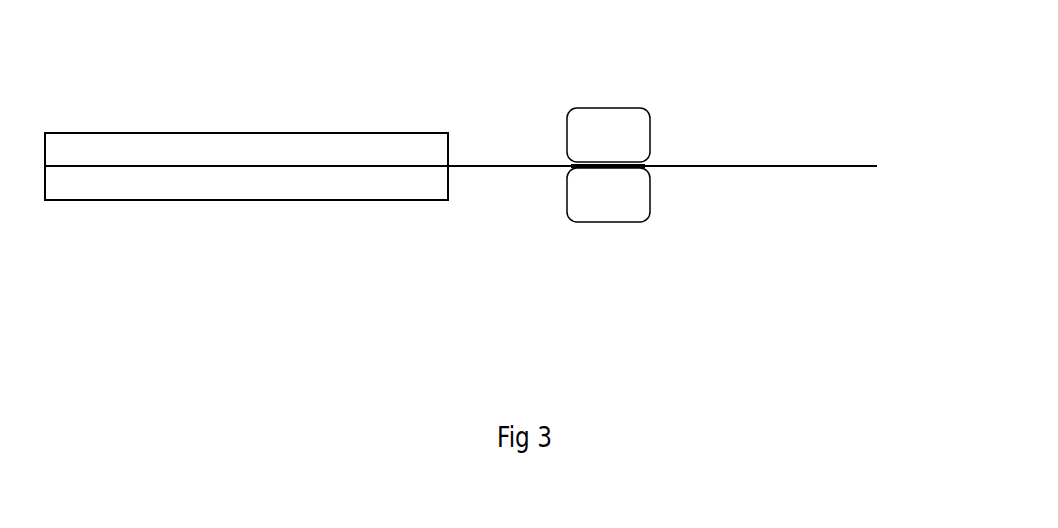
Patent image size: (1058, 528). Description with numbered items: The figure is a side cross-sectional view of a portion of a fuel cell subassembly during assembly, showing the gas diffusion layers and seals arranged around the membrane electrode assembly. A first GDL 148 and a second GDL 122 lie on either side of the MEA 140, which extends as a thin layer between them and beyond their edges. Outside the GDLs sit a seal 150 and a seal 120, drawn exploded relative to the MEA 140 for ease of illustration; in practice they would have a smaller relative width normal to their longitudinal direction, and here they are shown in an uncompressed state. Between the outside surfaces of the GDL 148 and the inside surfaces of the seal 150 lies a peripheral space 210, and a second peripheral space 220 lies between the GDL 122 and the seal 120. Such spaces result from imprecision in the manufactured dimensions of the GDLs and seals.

The MEA 140 is at (873, 160).
The GDL 148 is at (327, 145).
The GDL 122 is at (323, 191).
The peripheral space 210 is at (463, 153).
The space 220 is at (462, 178).
The seal 150 is at (643, 92).
The seal 120 is at (645, 238).